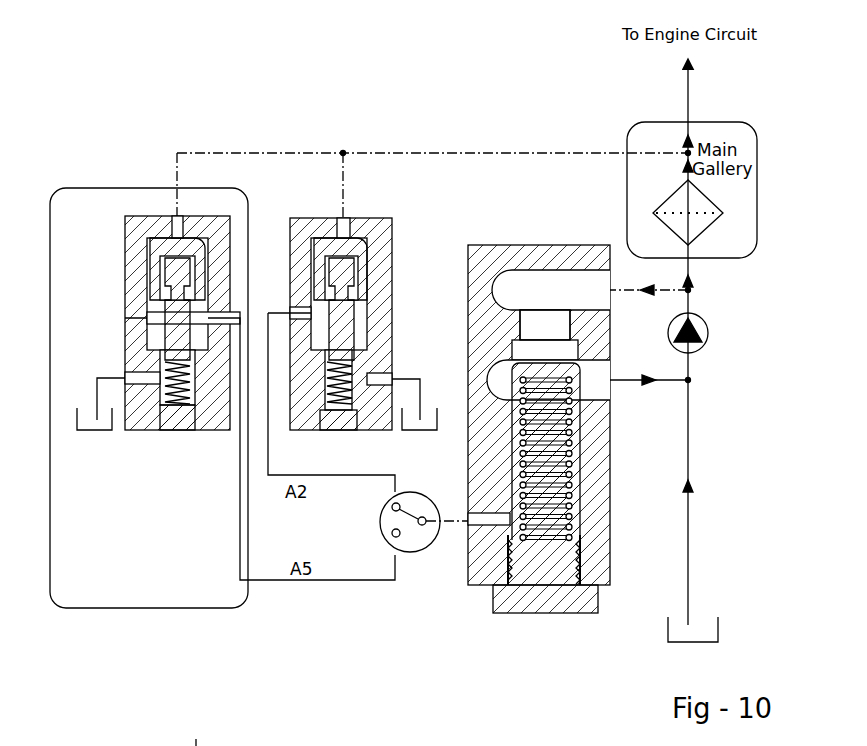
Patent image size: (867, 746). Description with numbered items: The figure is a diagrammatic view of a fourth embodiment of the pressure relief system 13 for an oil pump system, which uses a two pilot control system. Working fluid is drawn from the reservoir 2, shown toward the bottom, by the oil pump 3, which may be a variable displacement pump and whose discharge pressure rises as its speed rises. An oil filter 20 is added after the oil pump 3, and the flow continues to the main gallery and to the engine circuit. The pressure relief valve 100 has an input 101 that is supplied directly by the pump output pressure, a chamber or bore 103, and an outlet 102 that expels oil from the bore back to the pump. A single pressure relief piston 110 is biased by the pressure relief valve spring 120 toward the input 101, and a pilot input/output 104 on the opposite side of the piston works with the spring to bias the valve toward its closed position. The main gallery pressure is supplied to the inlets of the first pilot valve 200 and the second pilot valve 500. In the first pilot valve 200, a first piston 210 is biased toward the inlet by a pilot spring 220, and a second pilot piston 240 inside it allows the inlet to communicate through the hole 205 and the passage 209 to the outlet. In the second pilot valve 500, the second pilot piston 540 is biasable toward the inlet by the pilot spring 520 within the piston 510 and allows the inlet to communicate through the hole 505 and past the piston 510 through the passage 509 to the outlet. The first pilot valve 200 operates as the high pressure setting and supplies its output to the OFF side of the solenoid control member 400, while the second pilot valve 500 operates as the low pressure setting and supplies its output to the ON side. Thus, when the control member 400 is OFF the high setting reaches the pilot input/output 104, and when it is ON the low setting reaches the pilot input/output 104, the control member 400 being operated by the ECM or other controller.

The reservoir 2 is at (676, 643).
The oil pump 3 is at (708, 328).
The pressure relief system 13 is at (448, 212).
The oil filter 20 is at (663, 204).
The pressure relief valve 100 is at (530, 245).
The input 101 is at (618, 292).
The outlet 102 is at (622, 382).
The chamber or bore 103 is at (545, 325).
The pilot input/output 104 is at (440, 520).
The pressure relief piston 110 is at (590, 435).
The pressure relief valve spring 120 is at (572, 518).
The first pilot valve 200 is at (355, 432).
The hole 205 is at (342, 255).
The passage 209 is at (315, 312).
The first piston 210 is at (372, 250).
The pilot spring 220 is at (353, 378).
The second pilot piston 240 is at (345, 285).
The control member 400 is at (418, 552).
The second pilot valve 500 is at (135, 432).
The hole 505 is at (178, 234).
The passage 509 is at (158, 323).
The piston 510 is at (176, 250).
The pilot spring 520 is at (182, 408).
The second pilot piston 540 is at (180, 285).